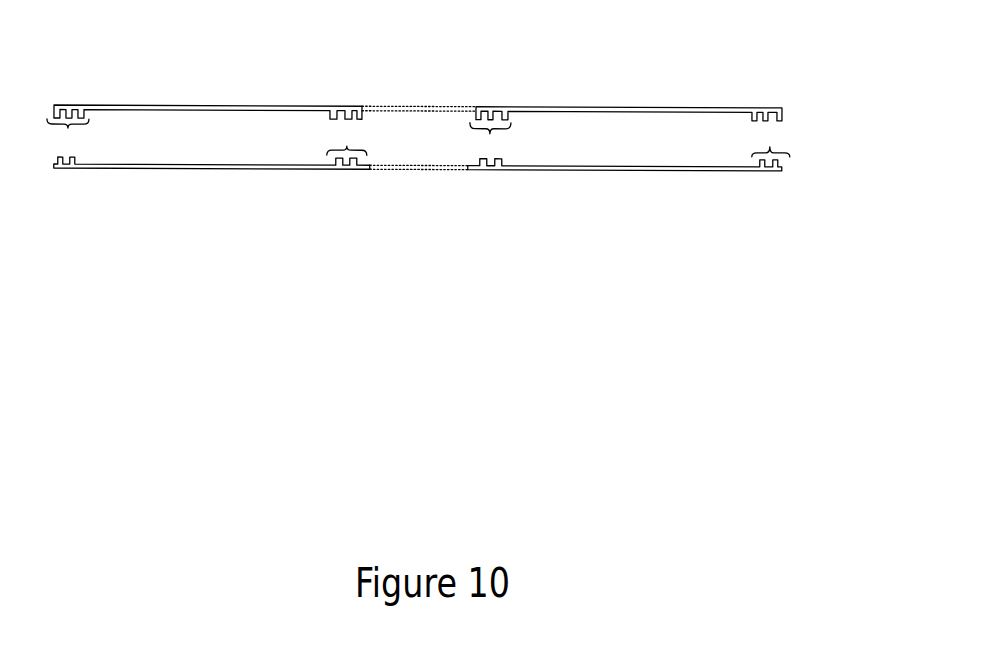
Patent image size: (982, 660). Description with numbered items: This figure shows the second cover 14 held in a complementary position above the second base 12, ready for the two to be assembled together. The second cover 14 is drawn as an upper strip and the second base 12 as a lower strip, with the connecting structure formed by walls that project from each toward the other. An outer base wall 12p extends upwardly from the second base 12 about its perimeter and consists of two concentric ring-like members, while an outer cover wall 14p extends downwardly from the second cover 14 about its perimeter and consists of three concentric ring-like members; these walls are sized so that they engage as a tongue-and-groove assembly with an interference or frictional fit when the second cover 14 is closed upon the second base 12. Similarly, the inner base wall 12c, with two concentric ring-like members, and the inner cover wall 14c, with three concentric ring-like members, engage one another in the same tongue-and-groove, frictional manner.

The second base 12 is at (712, 167).
The second cover 14 is at (710, 104).
The outer base wall 12p is at (776, 145).
The inner base wall 12c is at (362, 147).
The outer cover wall 14p is at (80, 130).
The inner cover wall 14c is at (483, 133).